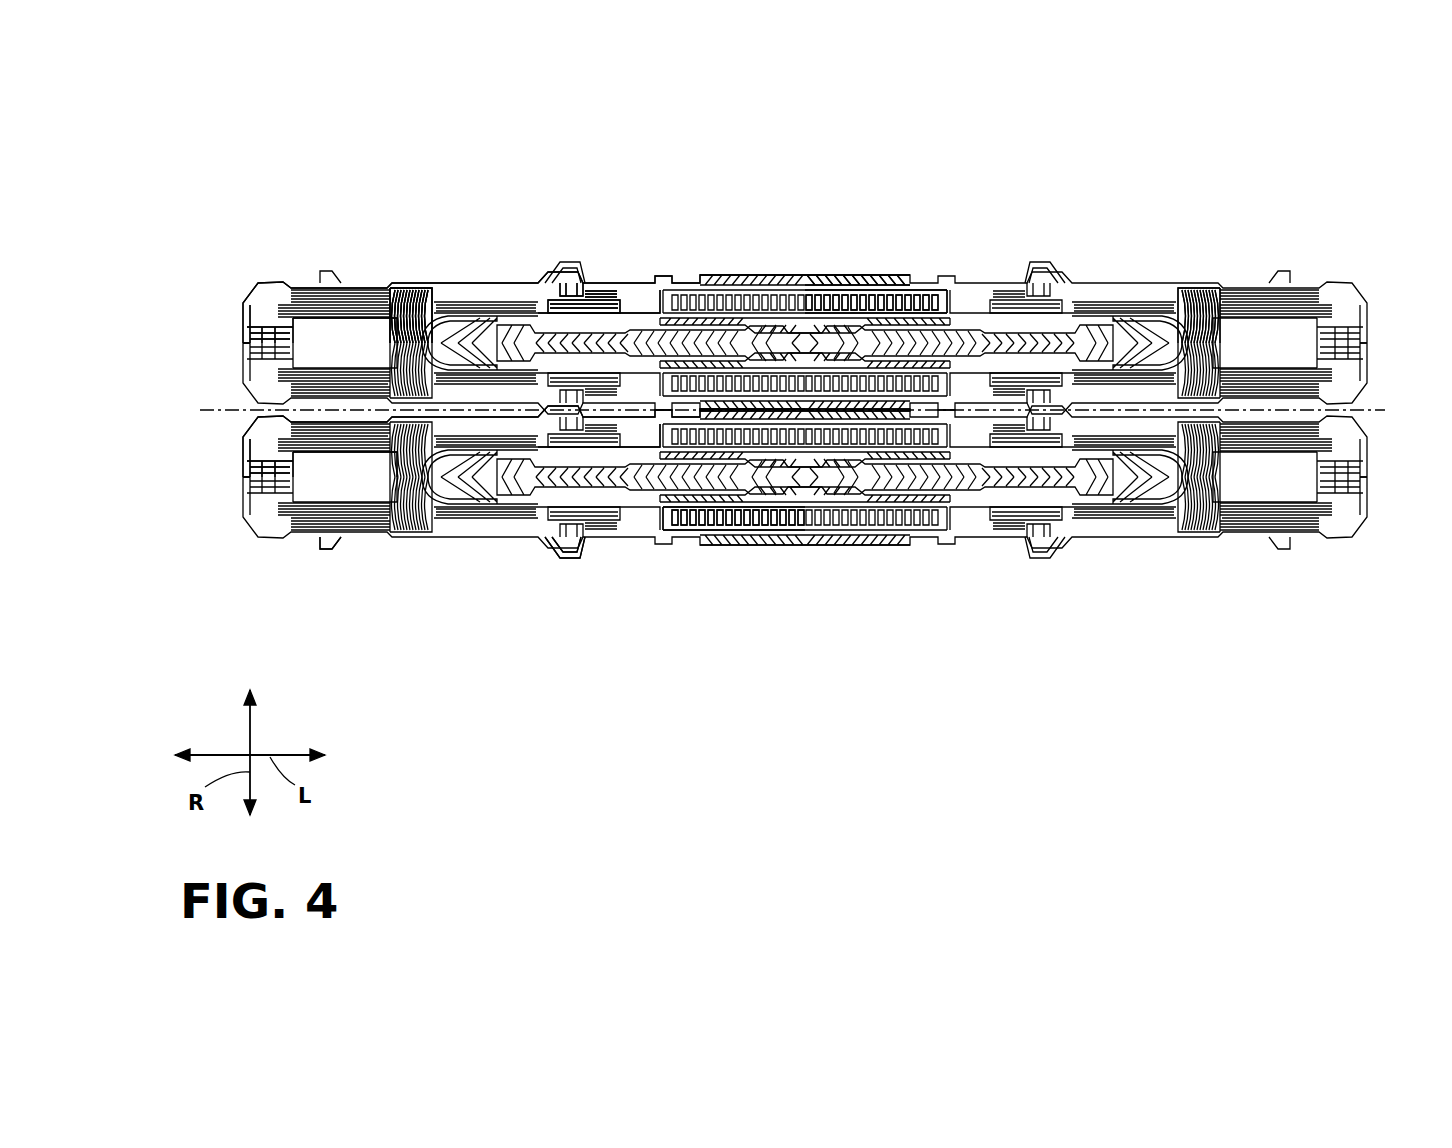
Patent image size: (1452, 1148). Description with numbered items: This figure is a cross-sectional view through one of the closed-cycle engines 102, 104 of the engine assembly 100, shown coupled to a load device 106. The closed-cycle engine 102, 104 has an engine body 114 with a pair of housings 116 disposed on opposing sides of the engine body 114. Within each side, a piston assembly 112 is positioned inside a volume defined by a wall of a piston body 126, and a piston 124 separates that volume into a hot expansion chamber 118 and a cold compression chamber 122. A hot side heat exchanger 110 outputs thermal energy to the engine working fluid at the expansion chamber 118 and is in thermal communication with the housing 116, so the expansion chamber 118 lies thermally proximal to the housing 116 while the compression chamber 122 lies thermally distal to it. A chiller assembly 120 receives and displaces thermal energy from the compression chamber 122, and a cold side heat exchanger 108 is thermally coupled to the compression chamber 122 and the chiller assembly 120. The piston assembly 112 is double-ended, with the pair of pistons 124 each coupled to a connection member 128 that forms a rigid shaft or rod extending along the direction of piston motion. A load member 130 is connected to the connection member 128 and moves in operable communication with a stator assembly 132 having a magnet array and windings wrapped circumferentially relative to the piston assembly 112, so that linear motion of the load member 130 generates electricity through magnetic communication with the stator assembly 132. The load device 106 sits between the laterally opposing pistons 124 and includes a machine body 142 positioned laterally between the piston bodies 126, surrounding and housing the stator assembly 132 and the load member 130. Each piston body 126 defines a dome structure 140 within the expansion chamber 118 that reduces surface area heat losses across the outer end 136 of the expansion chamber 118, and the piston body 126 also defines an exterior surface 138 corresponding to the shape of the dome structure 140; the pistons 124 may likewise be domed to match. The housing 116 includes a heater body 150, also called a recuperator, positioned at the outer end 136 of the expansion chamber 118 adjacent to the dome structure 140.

The engine assembly 100 is at (962, 258).
The closed-cycle engine 102 is at (372, 152).
The closed-cycle engine 104 is at (524, 441).
The load device 106 is at (870, 287).
The cold side heat exchanger 108 is at (605, 300).
The hot side heat exchanger 110 is at (413, 330).
The piston assembly 112 is at (515, 512).
The engine body 114 is at (820, 285).
The housing 116 is at (258, 285).
The expansion chamber 118 is at (805, 410).
The chiller assembly 120 is at (640, 287).
The compression chamber 122 is at (590, 280).
The piston 124 is at (422, 325).
The piston body 126 is at (500, 312).
The connection member 128 is at (1015, 335).
The load member 130 is at (893, 370).
The stator assembly 132 is at (905, 300).
The outer end 136 is at (235, 407).
The exterior surface 138 is at (392, 290).
The dome structure 140 is at (448, 310).
The machine body 142 is at (735, 285).
The heater body 150 is at (322, 300).